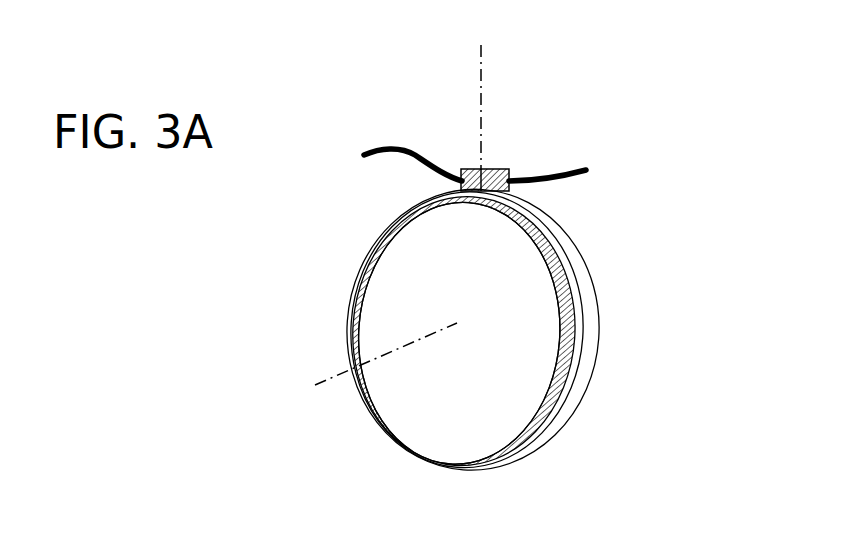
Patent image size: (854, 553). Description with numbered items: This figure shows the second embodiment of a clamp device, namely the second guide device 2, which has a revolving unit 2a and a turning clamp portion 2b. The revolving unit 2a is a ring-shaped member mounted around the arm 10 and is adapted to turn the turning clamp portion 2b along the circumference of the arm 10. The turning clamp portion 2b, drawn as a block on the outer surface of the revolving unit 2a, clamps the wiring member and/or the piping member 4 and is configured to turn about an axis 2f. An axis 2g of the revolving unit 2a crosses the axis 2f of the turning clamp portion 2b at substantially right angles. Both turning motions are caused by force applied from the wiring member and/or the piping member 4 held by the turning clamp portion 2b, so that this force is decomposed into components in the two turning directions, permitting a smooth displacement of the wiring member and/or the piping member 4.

The second guide device 2 is at (621, 187).
The revolving unit 2a is at (592, 287).
The turning clamp portion 2b is at (503, 168).
The axis 2f is at (479, 90).
The axis 2g is at (371, 363).
The wiring member and/or piping member 4 is at (405, 152).
The arm 10 is at (418, 278).